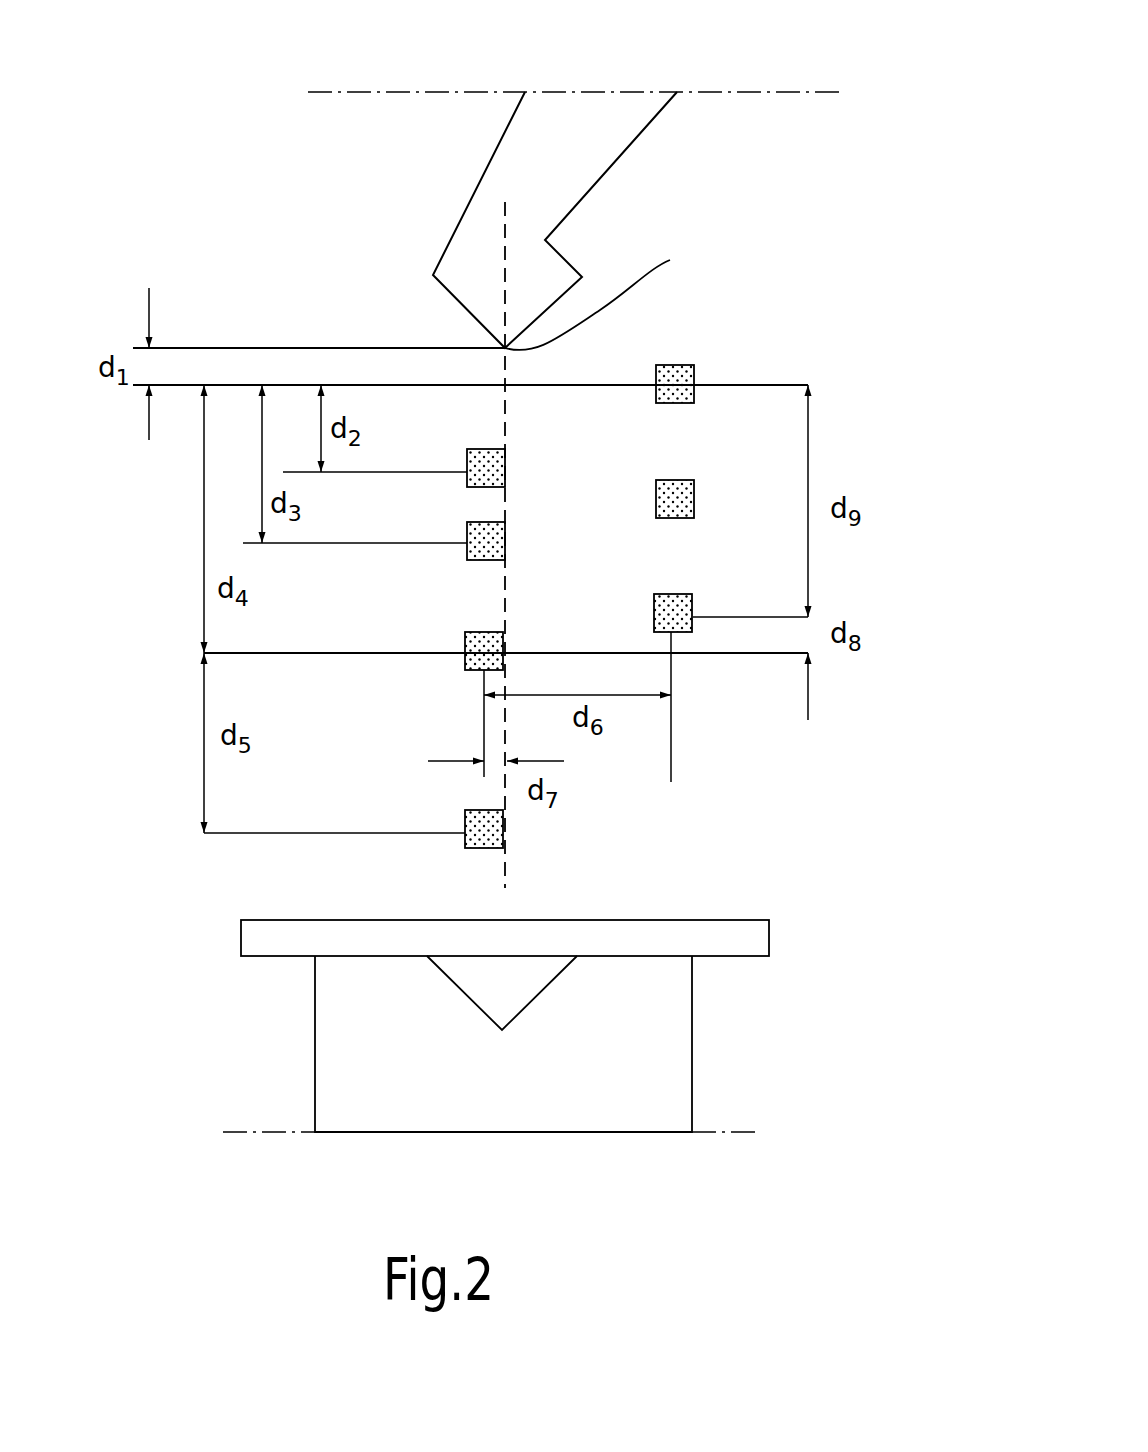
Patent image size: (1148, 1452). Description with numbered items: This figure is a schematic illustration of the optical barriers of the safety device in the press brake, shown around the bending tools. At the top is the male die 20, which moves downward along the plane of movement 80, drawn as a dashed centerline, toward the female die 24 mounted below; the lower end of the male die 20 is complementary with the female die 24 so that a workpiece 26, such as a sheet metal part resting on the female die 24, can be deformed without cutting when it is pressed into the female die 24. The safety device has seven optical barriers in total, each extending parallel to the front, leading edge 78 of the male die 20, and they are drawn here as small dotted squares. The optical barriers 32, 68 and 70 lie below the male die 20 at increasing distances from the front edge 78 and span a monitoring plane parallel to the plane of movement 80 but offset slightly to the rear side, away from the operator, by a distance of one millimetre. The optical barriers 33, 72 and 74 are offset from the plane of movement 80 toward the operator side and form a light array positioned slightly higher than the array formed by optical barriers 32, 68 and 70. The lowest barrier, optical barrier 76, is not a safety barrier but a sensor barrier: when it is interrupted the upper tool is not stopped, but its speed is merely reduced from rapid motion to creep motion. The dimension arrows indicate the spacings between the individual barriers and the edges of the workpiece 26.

The male die 20 is at (497, 173).
The female die 24 is at (577, 1090).
The workpiece 26 is at (754, 938).
The optical barrier 32 is at (487, 468).
The optical barrier 33 is at (680, 365).
The optical barrier 68 is at (495, 540).
The optical barrier 70 is at (490, 648).
The optical barrier 72 is at (680, 495).
The optical barrier 74 is at (677, 605).
The optical barrier 76 is at (477, 836).
The front edge 78 is at (470, 309).
The plane of movement 80 is at (505, 267).